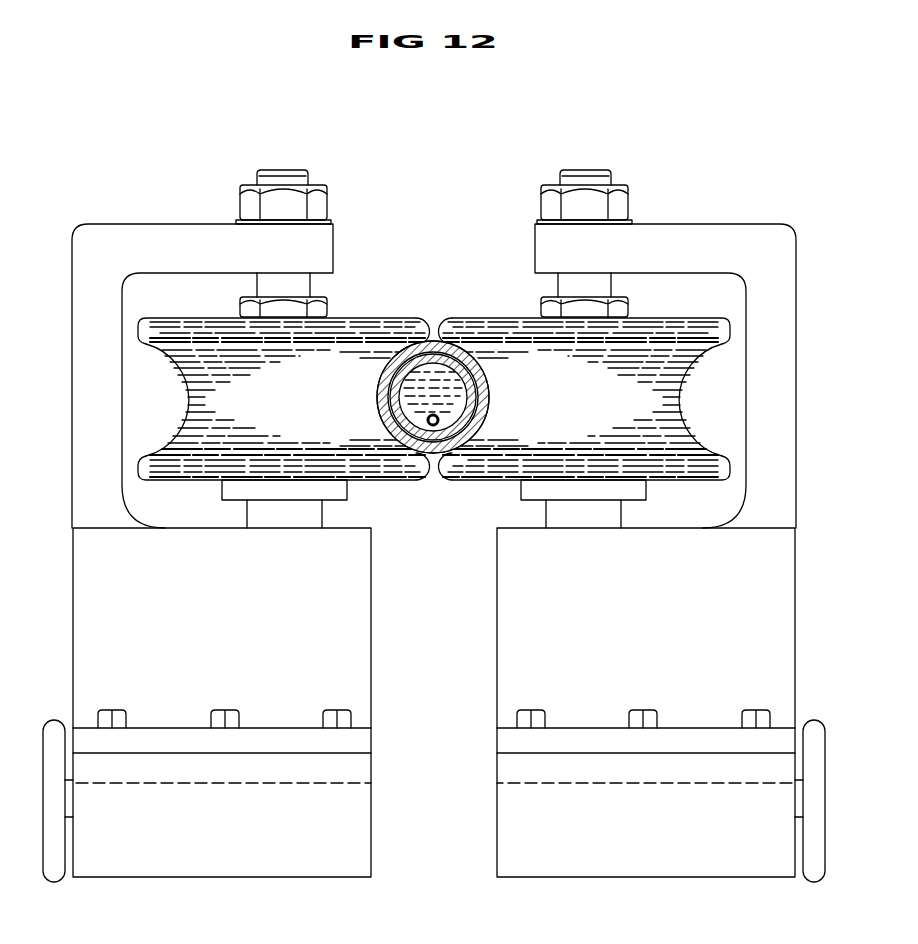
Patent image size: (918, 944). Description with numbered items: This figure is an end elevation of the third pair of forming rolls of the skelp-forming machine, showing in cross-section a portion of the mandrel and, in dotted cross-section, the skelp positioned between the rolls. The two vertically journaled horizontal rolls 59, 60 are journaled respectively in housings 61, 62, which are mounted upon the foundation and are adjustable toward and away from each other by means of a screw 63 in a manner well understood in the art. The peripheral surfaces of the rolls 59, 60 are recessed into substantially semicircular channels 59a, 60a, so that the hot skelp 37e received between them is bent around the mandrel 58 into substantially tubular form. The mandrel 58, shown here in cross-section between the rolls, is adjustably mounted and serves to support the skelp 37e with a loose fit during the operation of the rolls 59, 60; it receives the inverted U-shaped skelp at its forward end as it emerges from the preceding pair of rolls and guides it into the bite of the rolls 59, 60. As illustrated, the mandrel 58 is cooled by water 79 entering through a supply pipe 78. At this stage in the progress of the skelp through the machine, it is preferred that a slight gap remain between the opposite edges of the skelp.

The hot skelp 37e is at (433, 340).
The mandrel 58 is at (432, 428).
The horizontal roll 59 is at (357, 330).
The semicircular channel 59a is at (200, 400).
The horizontal roll 60 is at (497, 330).
The semicircular channel 60a is at (678, 400).
The housing 61 is at (148, 237).
The housing 62 is at (687, 235).
The screw 63 is at (55, 868).
The supply pipe 78 is at (400, 450).
The water 79 is at (457, 413).